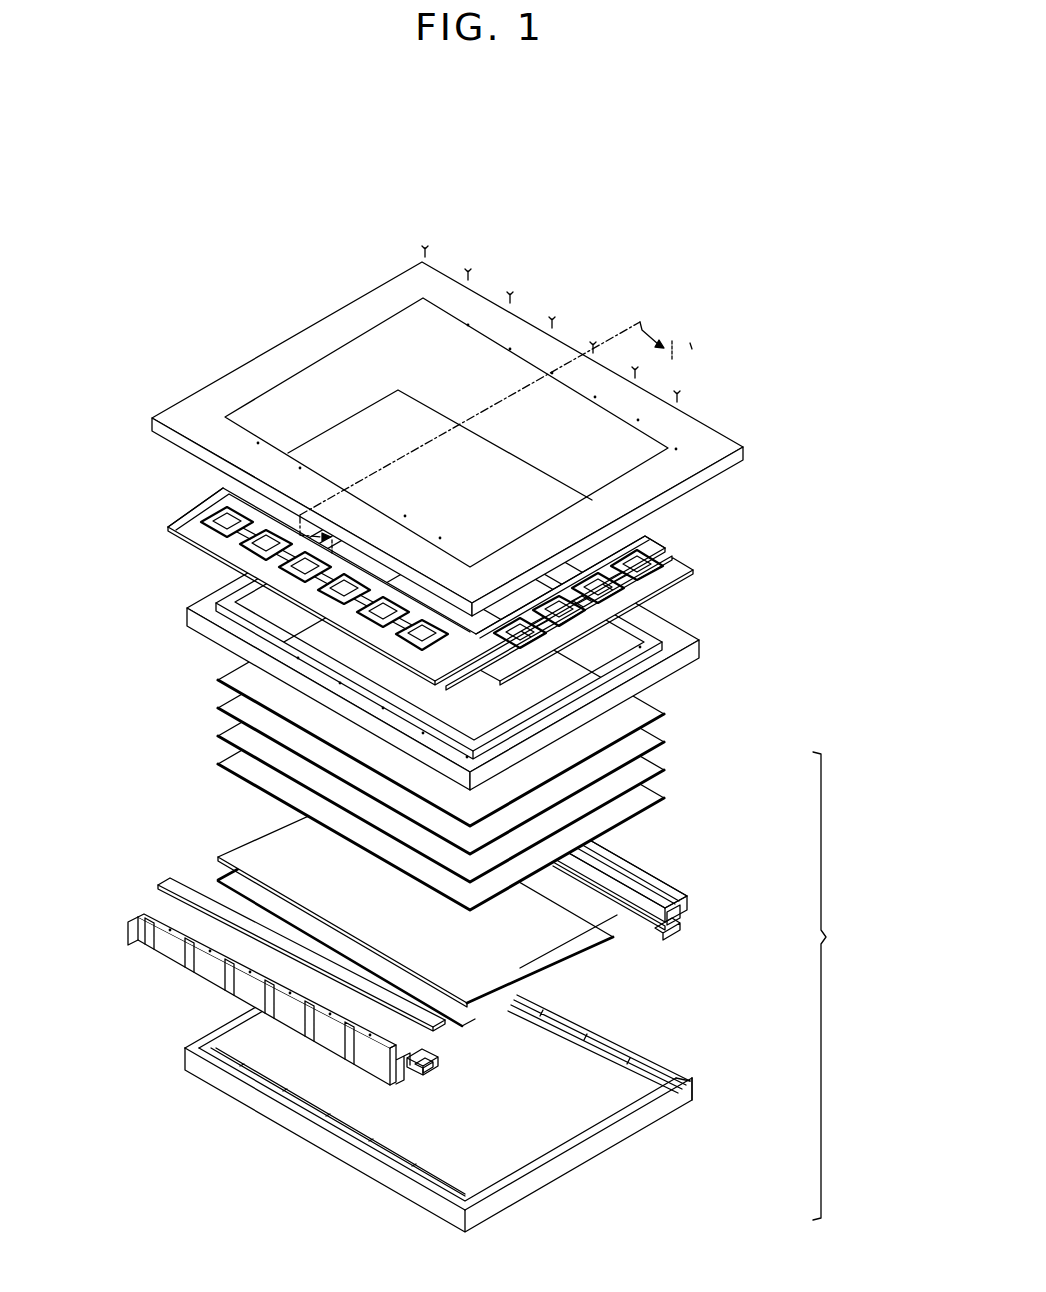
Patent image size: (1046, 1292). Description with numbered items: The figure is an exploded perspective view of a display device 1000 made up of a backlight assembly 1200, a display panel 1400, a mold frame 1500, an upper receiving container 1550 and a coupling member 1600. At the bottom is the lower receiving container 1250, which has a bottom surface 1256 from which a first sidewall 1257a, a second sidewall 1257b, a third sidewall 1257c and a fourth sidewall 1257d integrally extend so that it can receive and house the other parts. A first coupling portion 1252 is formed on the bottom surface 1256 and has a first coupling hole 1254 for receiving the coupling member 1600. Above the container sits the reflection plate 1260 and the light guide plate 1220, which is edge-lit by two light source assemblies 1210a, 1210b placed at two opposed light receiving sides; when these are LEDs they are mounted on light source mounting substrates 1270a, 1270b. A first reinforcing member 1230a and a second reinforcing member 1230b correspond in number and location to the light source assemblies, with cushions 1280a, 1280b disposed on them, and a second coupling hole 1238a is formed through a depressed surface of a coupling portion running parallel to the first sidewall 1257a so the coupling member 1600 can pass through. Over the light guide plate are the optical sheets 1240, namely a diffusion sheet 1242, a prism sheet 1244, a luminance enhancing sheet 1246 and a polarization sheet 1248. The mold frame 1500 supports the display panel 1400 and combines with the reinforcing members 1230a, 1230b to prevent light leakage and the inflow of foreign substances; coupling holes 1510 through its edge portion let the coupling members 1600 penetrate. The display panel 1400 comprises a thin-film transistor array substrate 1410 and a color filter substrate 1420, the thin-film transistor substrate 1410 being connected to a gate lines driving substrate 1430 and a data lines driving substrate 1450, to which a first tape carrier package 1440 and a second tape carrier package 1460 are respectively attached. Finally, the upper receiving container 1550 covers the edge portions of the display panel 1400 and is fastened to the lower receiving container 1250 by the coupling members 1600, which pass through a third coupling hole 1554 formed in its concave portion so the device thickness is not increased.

The display device 1000 is at (461, 142).
The backlight assembly 1200 is at (845, 986).
The first light source assembly 1210a is at (428, 1072).
The second light source assembly 1210b is at (681, 921).
The light guide plate 1220 is at (608, 900).
The first reinforcing member 1230a is at (225, 956).
The second reinforcing member 1230b is at (669, 895).
The second coupling hole 1238a is at (138, 919).
The optical sheets 1240 is at (518, 739).
The diffusion sheet 1242 is at (667, 797).
The prism sheet 1244 is at (667, 769).
The luminance enhancing sheet 1246 is at (667, 741).
The polarization sheet 1248 is at (667, 713).
The lower receiving container 1250 is at (432, 1097).
The first coupling portion 1252 is at (210, 1063).
The first coupling hole 1254 is at (277, 1098).
The bottom surface 1256 is at (700, 1060).
The first sidewall 1257a is at (332, 1142).
The second sidewall 1257b is at (633, 1042).
The third sidewall 1257c is at (525, 1190).
The fourth sidewall 1257d is at (228, 1018).
The reflection plate 1260 is at (563, 962).
The light source mounting substrate 1270a is at (440, 1060).
The light source mounting substrate 1270b is at (668, 936).
The cushion 1280a is at (200, 893).
The cushion 1280b is at (690, 898).
The display panel 1400 is at (459, 573).
The thin-film transistor array substrate 1410 is at (660, 562).
The color filter substrate 1420 is at (648, 543).
The gate lines driving substrate 1430 is at (190, 544).
The first tape carrier package 1440 is at (213, 516).
The data lines driving substrate 1450 is at (660, 592).
The second tape carrier package 1460 is at (650, 572).
The mold frame 1500 is at (409, 633).
The coupling holes 1510 is at (258, 633).
The upper receiving container 1550 is at (424, 430).
The third coupling hole 1554 is at (228, 420).
The coupling member 1600 is at (430, 250).